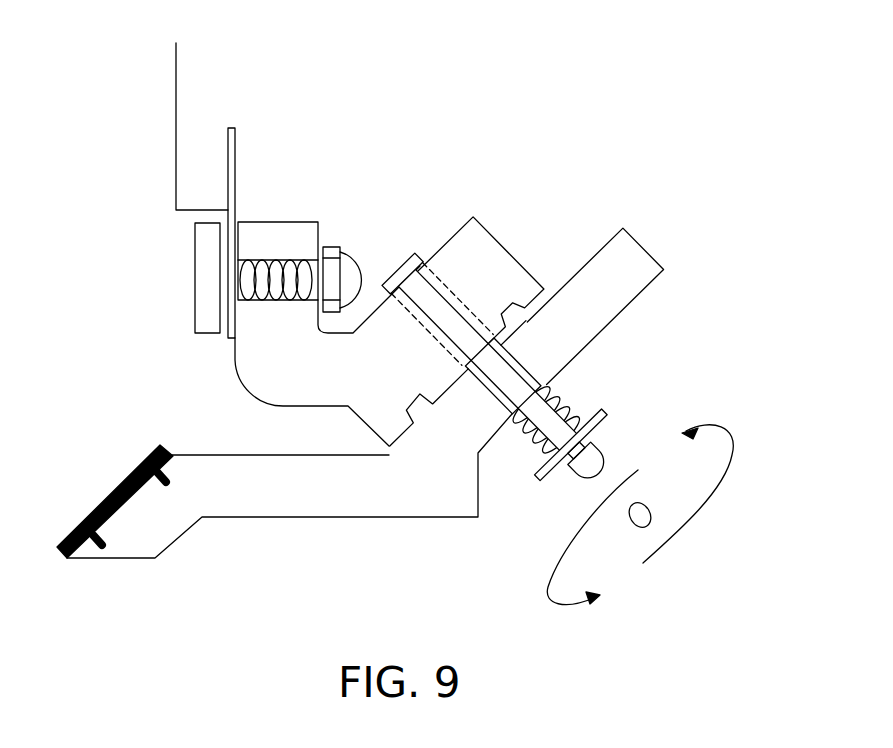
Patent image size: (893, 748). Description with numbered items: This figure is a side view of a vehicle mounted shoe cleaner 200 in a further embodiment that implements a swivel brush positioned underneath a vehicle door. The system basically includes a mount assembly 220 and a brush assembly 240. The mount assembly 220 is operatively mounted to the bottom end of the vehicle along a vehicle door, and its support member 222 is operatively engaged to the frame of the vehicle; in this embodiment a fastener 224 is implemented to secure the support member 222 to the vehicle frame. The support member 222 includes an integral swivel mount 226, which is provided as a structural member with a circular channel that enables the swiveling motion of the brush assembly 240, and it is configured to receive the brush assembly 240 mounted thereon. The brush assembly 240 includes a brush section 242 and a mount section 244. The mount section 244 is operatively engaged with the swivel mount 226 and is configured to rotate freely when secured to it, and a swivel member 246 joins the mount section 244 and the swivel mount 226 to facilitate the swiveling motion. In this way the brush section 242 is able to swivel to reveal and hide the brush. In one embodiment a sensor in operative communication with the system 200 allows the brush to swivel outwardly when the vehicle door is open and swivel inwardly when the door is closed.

The vehicle mounted shoe cleaner 200 is at (557, 77).
The mount assembly 220 is at (234, 352).
The support member 222 is at (310, 372).
The fastener 224 is at (250, 267).
The swivel mount 226 is at (505, 288).
The brush assembly 240 is at (391, 517).
The brush section 242 is at (145, 542).
The mount section 244 is at (635, 258).
The swivel member 246 is at (545, 405).